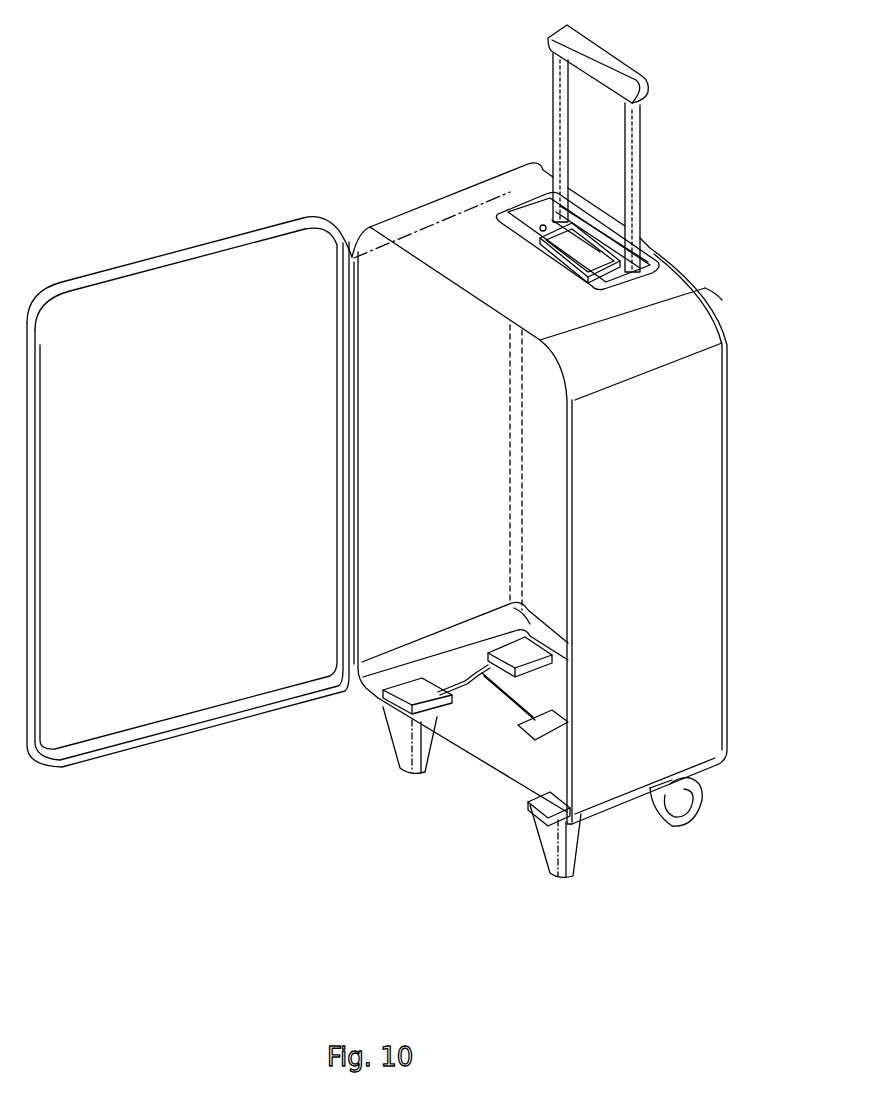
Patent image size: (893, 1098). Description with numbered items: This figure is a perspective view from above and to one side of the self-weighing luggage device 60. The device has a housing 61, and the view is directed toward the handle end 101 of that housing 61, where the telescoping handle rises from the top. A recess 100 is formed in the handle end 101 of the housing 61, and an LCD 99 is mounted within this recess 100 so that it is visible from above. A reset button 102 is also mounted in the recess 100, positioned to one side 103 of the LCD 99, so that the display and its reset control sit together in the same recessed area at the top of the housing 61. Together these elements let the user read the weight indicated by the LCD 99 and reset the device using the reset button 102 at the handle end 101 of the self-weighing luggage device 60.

The self-weighing luggage device 60 is at (344, 144).
The housing 61 is at (693, 447).
The LCD 99 is at (574, 250).
The recess 100 is at (615, 277).
The handle end 101 is at (662, 278).
The reset button 102 is at (540, 223).
The side 103 is at (540, 236).